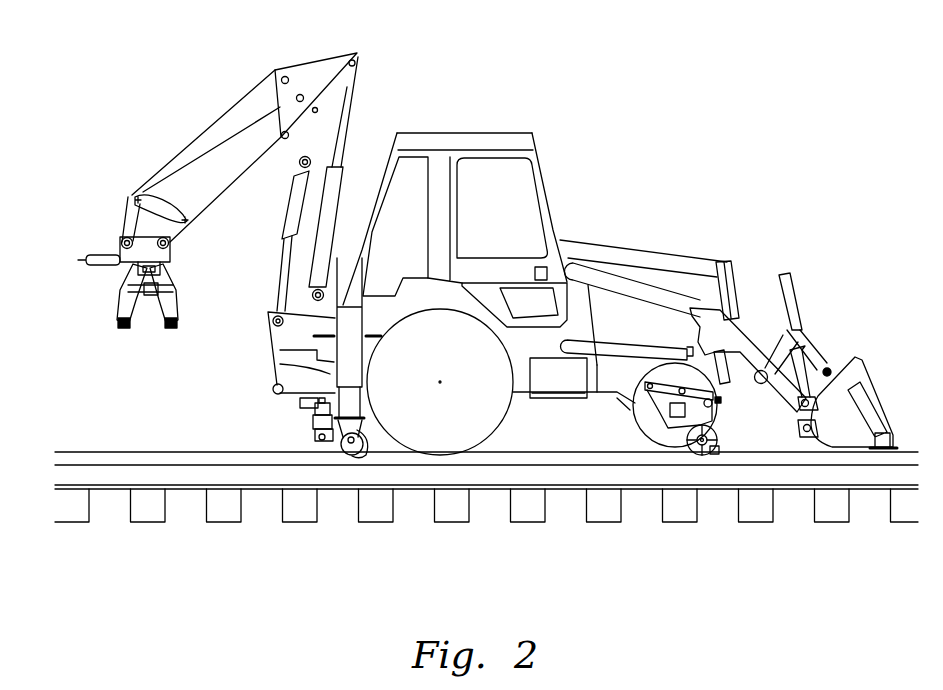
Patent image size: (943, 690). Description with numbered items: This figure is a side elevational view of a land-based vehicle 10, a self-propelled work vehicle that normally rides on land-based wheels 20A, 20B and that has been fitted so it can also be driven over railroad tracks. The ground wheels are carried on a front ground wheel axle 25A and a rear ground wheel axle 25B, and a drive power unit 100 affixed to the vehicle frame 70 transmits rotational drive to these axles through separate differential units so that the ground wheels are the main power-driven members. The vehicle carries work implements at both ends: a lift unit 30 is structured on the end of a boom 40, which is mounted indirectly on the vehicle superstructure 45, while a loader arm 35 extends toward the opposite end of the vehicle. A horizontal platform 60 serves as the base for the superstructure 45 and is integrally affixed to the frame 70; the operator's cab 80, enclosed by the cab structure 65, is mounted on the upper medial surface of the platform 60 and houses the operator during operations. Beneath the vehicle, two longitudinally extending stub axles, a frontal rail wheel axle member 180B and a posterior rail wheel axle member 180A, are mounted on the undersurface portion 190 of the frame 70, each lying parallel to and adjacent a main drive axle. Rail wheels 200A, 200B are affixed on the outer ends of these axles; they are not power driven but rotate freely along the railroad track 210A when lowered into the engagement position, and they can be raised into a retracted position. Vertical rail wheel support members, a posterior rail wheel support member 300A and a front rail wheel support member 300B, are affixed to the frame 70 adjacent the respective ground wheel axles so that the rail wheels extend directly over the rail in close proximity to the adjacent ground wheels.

The land-based vehicle 10 is at (580, 233).
The land-based wheel 20A is at (430, 430).
The land-based wheel 20B is at (670, 440).
The front ground wheel axle 25A is at (440, 381).
The rear ground wheel axle 25B is at (705, 442).
The lift unit 30 is at (190, 165).
The front loader arm 35 is at (738, 323).
The boom 40 is at (293, 218).
The vehicle superstructure 45 is at (333, 322).
The horizontal platform 60 is at (323, 362).
The operator cab 65 is at (383, 184).
The vehicle frame 70 is at (515, 389).
The operator's cab 80 is at (517, 192).
The drive power unit 100 is at (574, 393).
The posterior rail wheel axle member 180A is at (347, 454).
The frontal rail wheel axle member 180B is at (702, 446).
The undersurface portion of frame 190 is at (310, 403).
The rail wheel 200A is at (332, 452).
The rail wheel 200B is at (714, 452).
The railroad track 210A is at (134, 460).
The posterior rail wheel support member 300A is at (350, 307).
The front rail wheel support member 300B is at (687, 395).